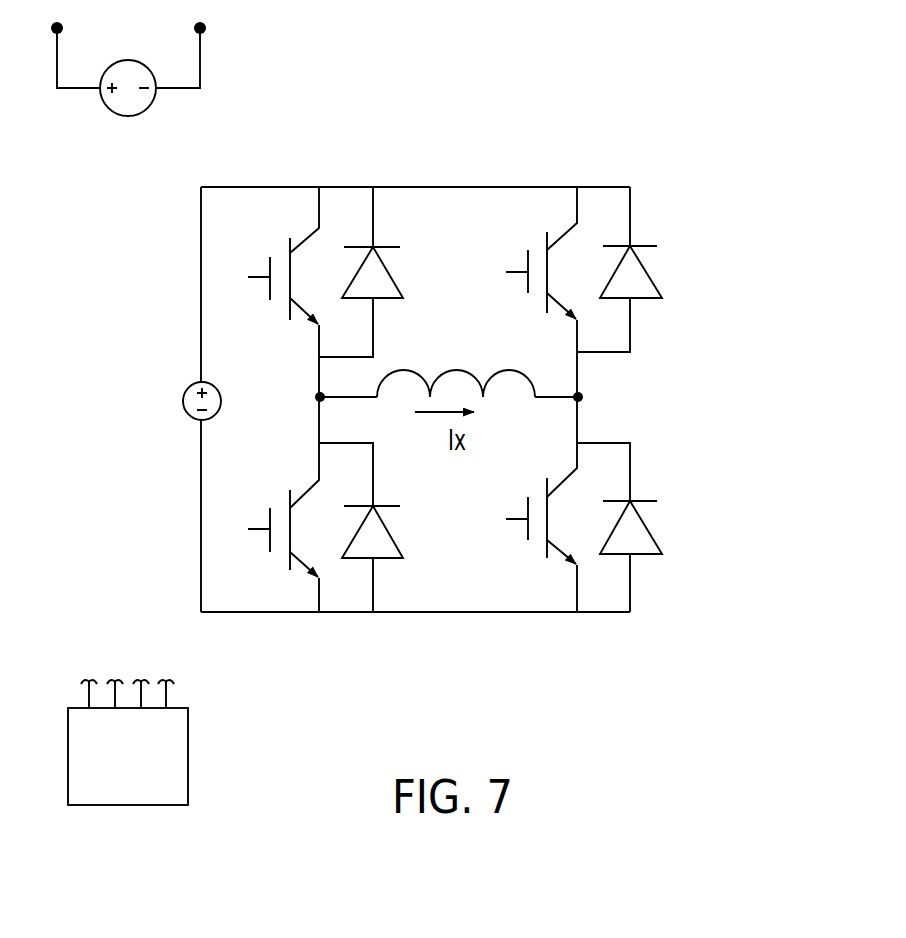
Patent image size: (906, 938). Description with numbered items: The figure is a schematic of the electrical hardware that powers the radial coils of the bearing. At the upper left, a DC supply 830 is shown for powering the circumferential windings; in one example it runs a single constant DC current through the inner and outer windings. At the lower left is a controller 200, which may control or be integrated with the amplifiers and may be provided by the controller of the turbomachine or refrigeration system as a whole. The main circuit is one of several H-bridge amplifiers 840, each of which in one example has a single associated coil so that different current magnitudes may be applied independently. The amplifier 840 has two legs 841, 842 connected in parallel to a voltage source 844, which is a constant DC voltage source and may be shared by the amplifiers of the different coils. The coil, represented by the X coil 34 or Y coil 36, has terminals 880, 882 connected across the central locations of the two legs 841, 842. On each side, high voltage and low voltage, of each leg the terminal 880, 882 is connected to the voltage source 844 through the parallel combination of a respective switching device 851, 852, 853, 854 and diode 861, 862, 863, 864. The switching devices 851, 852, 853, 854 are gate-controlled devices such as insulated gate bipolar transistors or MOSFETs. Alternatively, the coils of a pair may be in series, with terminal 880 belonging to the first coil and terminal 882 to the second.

The DC supply 830 is at (127, 128).
The controller 200 is at (147, 770).
The H-bridge amplifier 840 is at (461, 634).
The first leg 841 is at (347, 625).
The second leg 842 is at (603, 622).
The voltage source 844 is at (181, 389).
The switching device 851 is at (259, 269).
The switching device 852 is at (261, 536).
The switching device 853 is at (516, 261).
The switching device 854 is at (515, 531).
The diode 861 is at (407, 301).
The diode 862 is at (413, 542).
The diode 863 is at (673, 267).
The diode 864 is at (671, 533).
The coil terminal 880 is at (318, 399).
The coil terminal 882 is at (584, 398).
The X coil 34 is at (456, 338).
The Y coil 36 is at (469, 354).